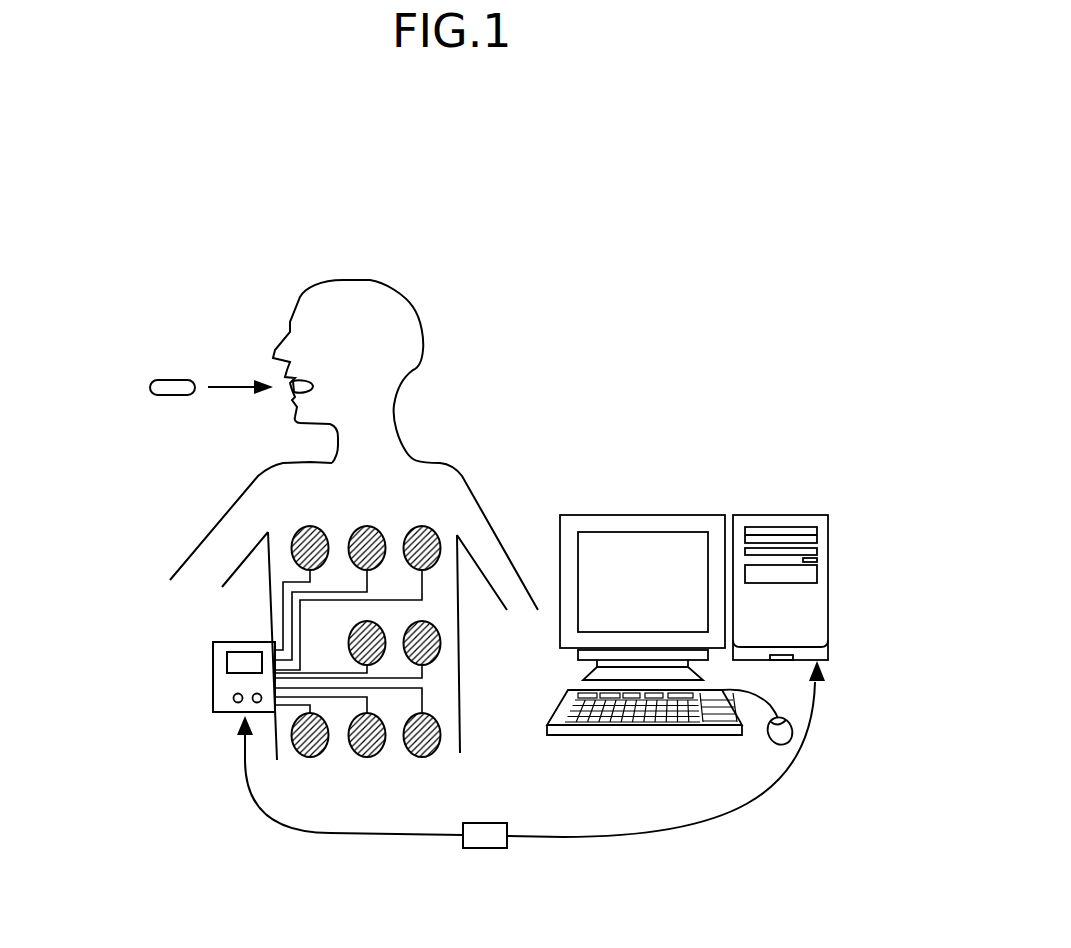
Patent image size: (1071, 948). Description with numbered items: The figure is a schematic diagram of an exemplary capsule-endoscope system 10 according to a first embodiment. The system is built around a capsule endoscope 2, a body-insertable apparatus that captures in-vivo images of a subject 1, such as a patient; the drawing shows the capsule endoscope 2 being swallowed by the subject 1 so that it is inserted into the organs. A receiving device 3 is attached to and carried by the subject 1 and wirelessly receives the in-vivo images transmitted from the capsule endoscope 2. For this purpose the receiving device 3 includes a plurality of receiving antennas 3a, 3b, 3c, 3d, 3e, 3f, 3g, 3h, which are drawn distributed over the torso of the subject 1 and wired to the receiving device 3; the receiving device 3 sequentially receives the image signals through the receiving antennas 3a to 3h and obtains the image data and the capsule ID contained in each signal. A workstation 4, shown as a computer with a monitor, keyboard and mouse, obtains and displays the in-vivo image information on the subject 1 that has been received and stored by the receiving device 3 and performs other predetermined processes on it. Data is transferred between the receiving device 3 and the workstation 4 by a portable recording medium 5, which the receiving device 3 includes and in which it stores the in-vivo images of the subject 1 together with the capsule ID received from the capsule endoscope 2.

The capsule-endoscope system 10 is at (466, 179).
The subject 1 is at (412, 301).
The capsule endoscope 2 is at (159, 378).
The receiving device 3 is at (213, 647).
The receiving antenna 3a is at (294, 534).
The receiving antenna 3b is at (367, 527).
The receiving antenna 3c is at (422, 527).
The receiving antenna 3d is at (364, 612).
The receiving antenna 3e is at (419, 612).
The receiving antenna 3f is at (311, 757).
The receiving antenna 3g is at (368, 757).
The receiving antenna 3h is at (423, 757).
The workstation 4 is at (670, 489).
The recording medium 5 is at (488, 850).